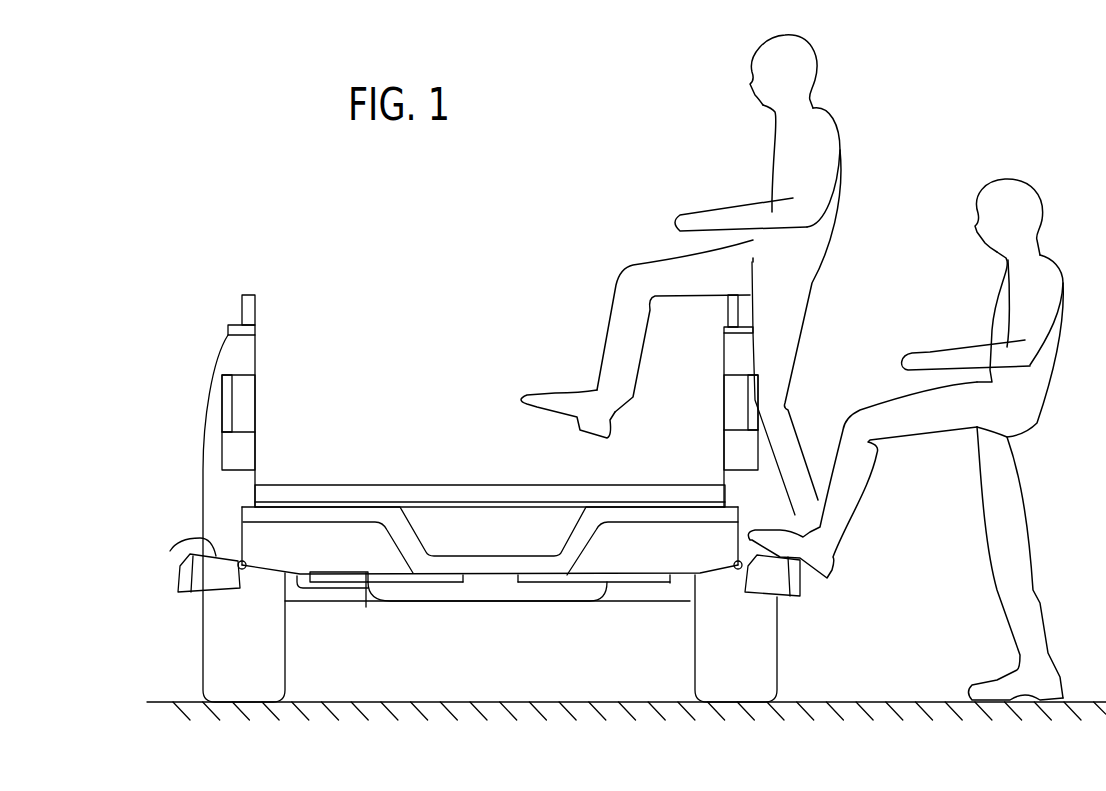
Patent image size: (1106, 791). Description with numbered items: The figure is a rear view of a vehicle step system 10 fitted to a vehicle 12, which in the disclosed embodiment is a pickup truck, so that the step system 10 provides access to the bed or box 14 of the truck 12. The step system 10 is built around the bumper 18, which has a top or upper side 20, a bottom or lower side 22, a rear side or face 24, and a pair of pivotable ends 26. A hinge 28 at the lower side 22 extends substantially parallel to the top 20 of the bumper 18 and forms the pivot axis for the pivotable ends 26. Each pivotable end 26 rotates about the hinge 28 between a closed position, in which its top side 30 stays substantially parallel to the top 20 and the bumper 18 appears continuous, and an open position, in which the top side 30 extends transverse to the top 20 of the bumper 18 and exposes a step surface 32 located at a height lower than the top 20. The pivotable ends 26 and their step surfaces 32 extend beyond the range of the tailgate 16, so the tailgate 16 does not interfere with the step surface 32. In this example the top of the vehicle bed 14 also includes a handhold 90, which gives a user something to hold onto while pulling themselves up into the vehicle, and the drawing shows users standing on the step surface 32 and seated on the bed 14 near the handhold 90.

The vehicle step system 10 is at (797, 603).
The vehicle 12 is at (214, 356).
The bed 14 is at (372, 403).
The tailgate 16 is at (259, 496).
The bumper 18 is at (657, 548).
The top side 20 is at (380, 505).
The bottom side 22 is at (360, 589).
The rear face 24 is at (318, 551).
The pivotable end 26 is at (198, 588).
The hinge 28 is at (243, 569).
The top side of the pivotable end 30 is at (176, 581).
The step surface 32 is at (172, 551).
The handhold 90 is at (245, 307).